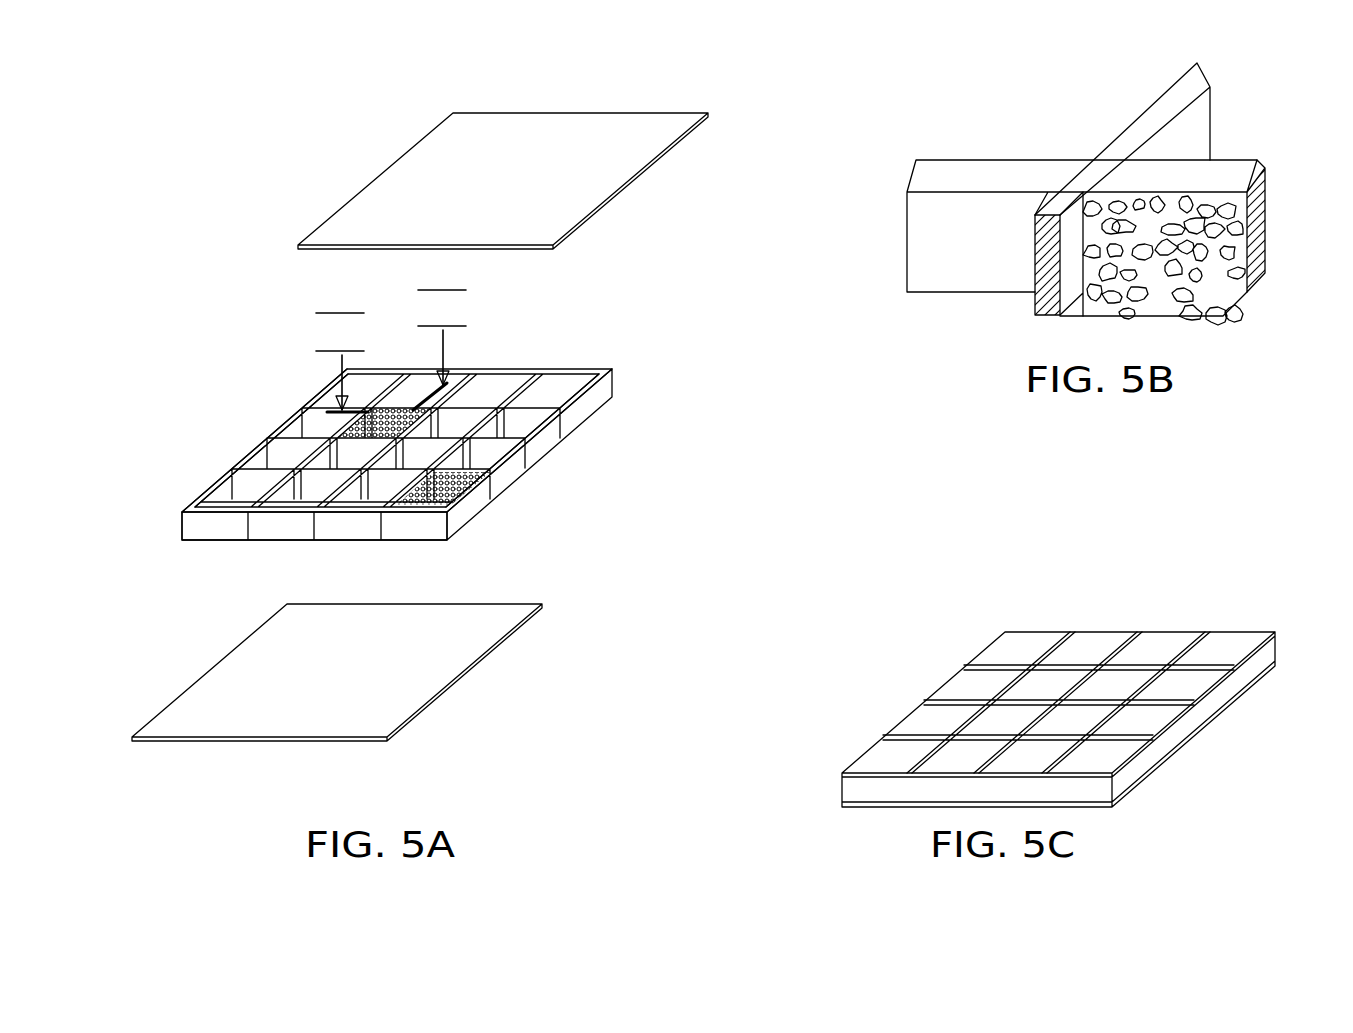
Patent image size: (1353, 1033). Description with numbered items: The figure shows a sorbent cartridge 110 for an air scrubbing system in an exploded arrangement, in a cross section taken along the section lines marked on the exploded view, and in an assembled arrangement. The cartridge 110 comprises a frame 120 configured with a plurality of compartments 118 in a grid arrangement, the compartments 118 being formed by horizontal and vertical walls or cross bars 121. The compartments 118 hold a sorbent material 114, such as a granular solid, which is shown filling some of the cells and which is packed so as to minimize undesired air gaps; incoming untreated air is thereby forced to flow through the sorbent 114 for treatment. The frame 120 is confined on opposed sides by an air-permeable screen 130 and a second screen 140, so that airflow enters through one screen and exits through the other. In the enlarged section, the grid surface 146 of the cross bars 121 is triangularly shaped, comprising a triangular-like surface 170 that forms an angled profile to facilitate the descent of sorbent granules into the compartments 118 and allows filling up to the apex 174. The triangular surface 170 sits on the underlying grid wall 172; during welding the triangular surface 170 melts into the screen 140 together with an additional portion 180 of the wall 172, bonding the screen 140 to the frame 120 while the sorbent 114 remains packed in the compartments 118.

In FIG. 5A, the sorbent cartridge 110 is at (255, 138).
In FIG. 5C, the sorbent cartridge 110 is at (1121, 592).
In FIG. 5A, the sorbent material 114 is at (423, 427).
In FIG. 5B, the sorbent material 114 is at (1080, 310).
In FIG. 5A, the compartments 118 is at (513, 410).
In FIG. 5A, the frame 120 is at (233, 515).
In FIG. 5A, the cross bars 121 is at (370, 500).
In FIG. 5B, the cross bars 121 is at (970, 160).
In FIG. 5A, the screen 130 is at (422, 685).
In FIG. 5A, the screen 140 is at (598, 150).
In FIG. 5A, the grid surface 146 is at (257, 453).
In FIG. 5B, the grid surface 146 is at (1265, 175).
In FIG. 5B, the triangular-like surface 170 is at (1040, 200).
In FIG. 5B, the grid wall 172 is at (1037, 243).
In FIG. 5B, the apex 174 is at (1083, 192).
In FIG. 5B, the additional portion 180 is at (893, 200).